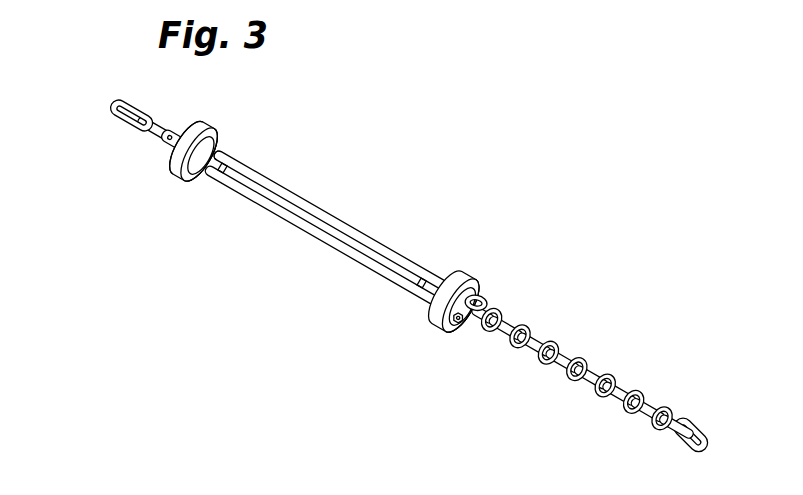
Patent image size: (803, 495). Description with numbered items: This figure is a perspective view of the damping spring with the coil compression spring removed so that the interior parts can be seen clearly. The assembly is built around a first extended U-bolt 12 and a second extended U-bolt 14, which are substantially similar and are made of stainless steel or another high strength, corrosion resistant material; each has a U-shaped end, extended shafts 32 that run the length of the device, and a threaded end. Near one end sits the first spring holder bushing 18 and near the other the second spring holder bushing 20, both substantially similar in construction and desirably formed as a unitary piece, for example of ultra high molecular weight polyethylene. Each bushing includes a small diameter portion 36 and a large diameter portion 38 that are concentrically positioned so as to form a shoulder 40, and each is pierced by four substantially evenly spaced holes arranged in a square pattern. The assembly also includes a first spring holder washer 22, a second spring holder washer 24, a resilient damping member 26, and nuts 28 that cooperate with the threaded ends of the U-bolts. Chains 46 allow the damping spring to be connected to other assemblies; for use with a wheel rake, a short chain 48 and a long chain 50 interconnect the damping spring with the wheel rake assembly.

The first extended U-bolt 12 is at (472, 333).
The second extended U-bolt 14 is at (158, 140).
The first spring holder bushing 18 is at (440, 322).
The second spring holder bushing 20 is at (174, 167).
The first spring holder washer 22 is at (483, 290).
The second spring holder washer 24 is at (193, 121).
The resilient damping member 26 is at (413, 290).
The nuts 28 is at (460, 323).
The extended shafts 32 is at (333, 219).
The small diameter portion 36 is at (222, 143).
The large diameter portion 38 is at (207, 130).
The shoulder 40 is at (188, 177).
The chains 46 is at (112, 104).
The short chain 48 is at (152, 114).
The long chain 50 is at (593, 360).